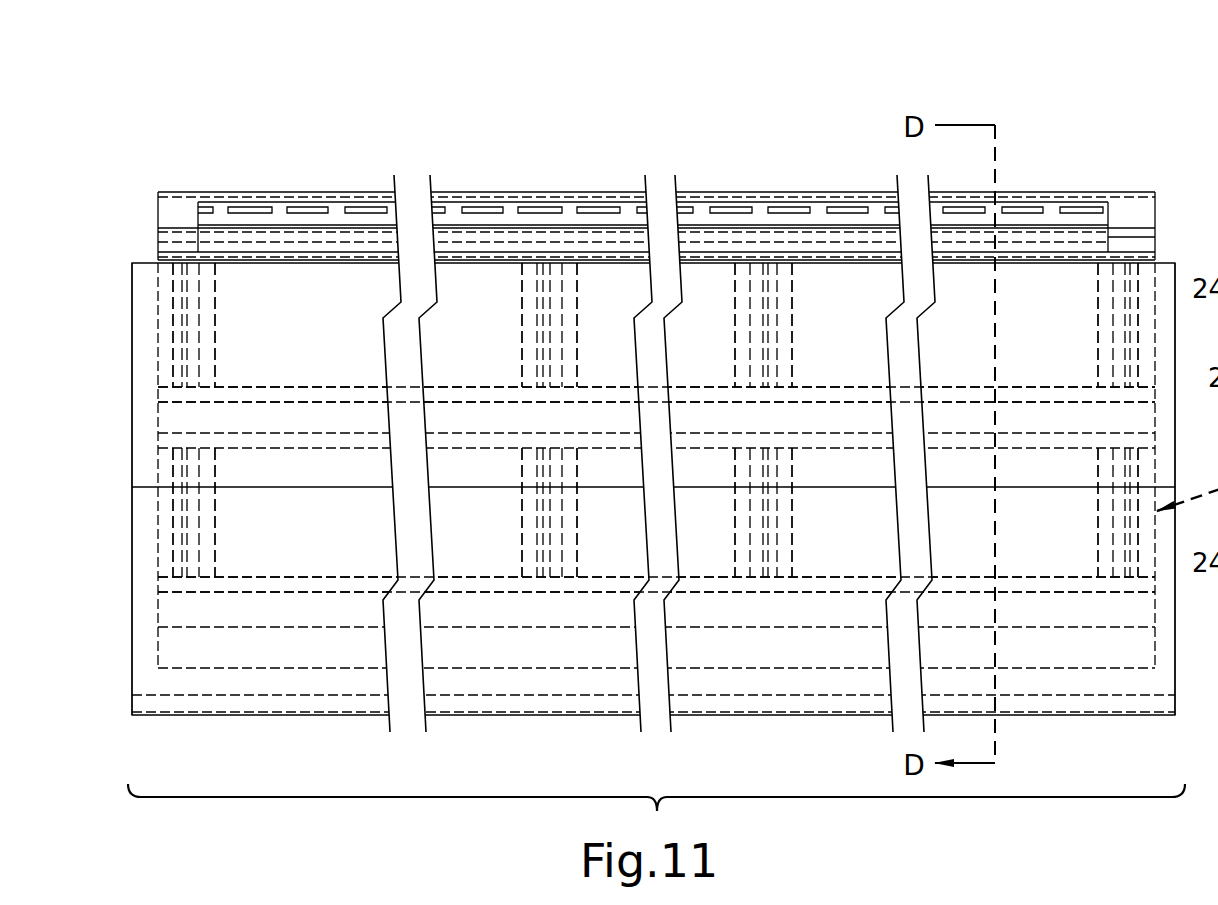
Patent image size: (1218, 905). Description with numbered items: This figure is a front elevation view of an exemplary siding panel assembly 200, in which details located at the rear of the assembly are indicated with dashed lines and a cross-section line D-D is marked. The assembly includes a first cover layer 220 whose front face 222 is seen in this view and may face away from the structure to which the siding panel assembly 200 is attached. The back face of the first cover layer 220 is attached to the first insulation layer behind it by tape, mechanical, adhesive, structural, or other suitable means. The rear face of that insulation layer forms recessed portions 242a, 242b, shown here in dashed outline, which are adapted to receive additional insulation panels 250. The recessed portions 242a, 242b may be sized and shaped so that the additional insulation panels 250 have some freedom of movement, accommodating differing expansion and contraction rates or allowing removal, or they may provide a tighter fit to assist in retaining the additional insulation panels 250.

The siding panel assembly 200 is at (688, 133).
The front face 222 is at (148, 278).
The first cover layer 220 is at (1160, 278).
The recessed portion 242a is at (512, 393).
The recessed portion 242b is at (843, 590).
The additional insulation panels 250 is at (1040, 545).